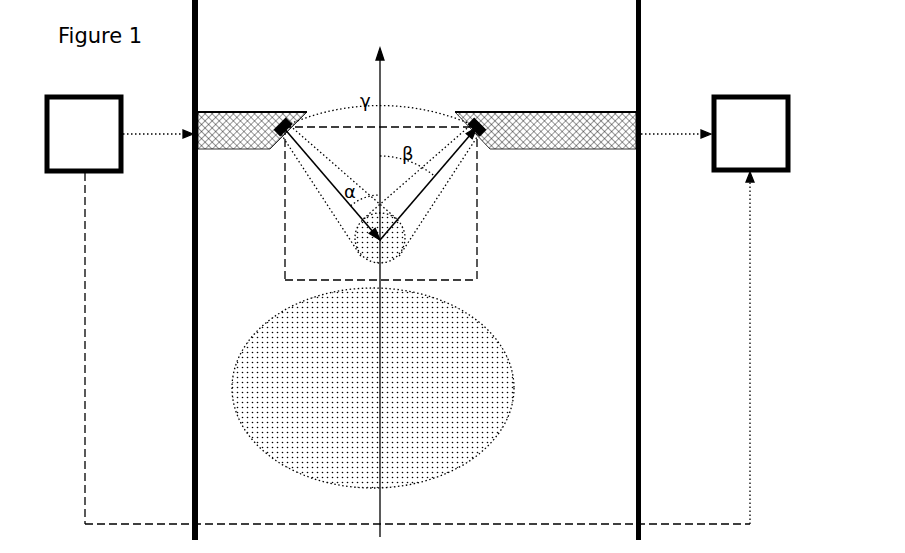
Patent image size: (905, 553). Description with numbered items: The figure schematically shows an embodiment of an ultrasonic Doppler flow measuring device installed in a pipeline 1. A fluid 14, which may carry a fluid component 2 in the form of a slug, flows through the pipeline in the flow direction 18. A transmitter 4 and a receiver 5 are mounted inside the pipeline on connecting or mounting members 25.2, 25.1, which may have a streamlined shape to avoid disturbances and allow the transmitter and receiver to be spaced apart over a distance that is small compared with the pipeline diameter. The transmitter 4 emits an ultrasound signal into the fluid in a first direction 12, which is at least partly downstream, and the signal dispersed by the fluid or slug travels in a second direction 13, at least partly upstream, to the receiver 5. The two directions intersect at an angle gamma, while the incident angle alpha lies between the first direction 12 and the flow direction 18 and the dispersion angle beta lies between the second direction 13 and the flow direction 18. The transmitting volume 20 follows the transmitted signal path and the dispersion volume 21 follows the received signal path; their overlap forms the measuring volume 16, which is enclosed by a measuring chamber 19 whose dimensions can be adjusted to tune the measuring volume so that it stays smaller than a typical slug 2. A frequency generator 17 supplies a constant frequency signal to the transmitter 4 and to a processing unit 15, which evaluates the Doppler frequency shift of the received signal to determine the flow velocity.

The pipeline 1 is at (641, 418).
The fluid component 2 is at (512, 372).
The transmitter 4 is at (283, 125).
The receiver 5 is at (482, 124).
The first direction 12 is at (372, 204).
The second direction 13 is at (392, 204).
The fluid 14 is at (553, 412).
The processing unit 15 is at (714, 310).
The measuring volume 16 is at (403, 253).
The frequency generator 17 is at (398, 310).
The flow direction 18 is at (381, 277).
The measuring chamber 19 is at (284, 246).
The transmitting volume 20 is at (365, 230).
The dispersion volume 21 is at (405, 232).
The mounting member 25.1 is at (542, 140).
The mounting member 25.2 is at (266, 143).